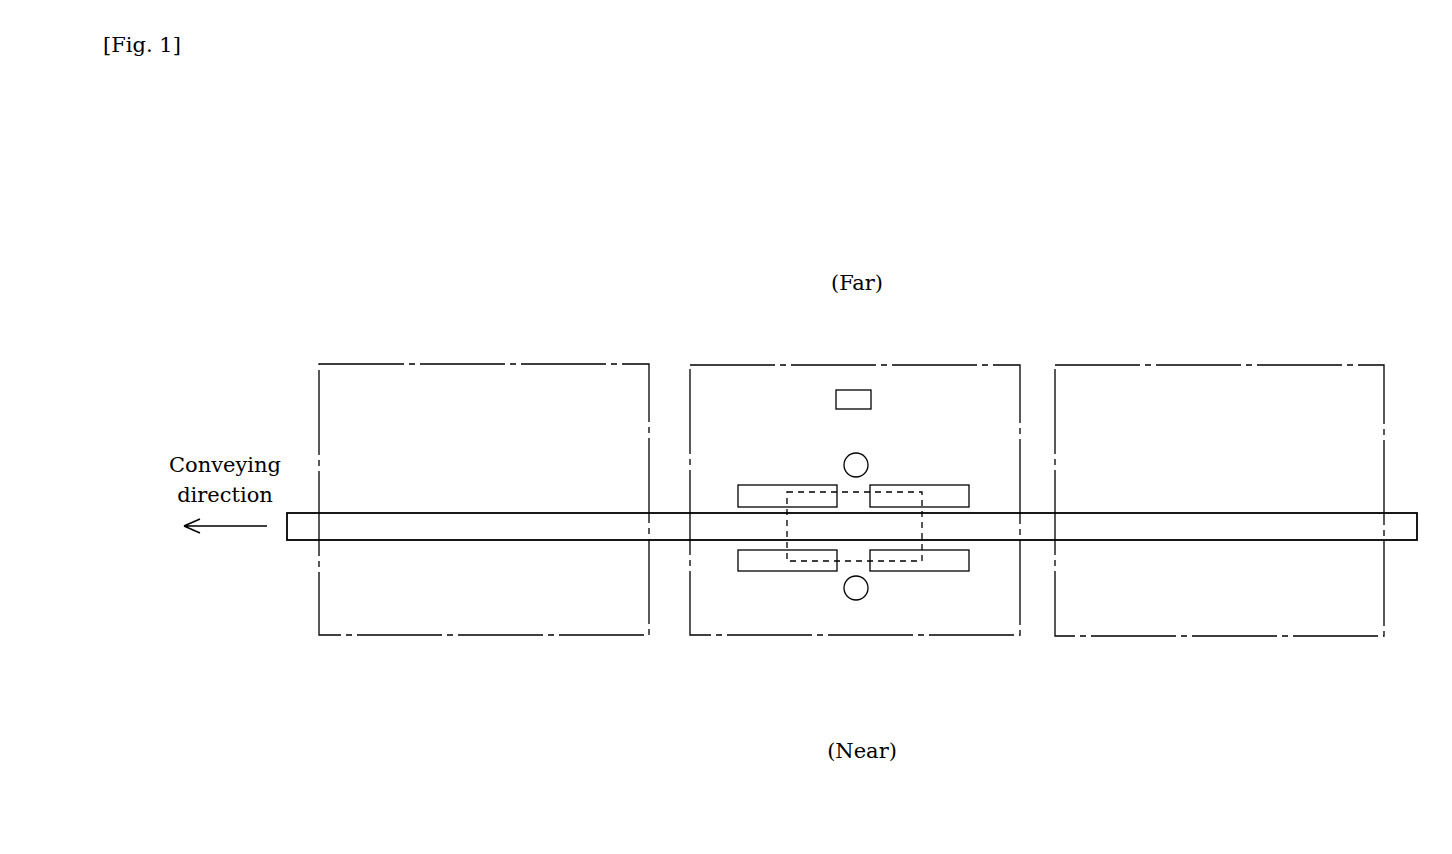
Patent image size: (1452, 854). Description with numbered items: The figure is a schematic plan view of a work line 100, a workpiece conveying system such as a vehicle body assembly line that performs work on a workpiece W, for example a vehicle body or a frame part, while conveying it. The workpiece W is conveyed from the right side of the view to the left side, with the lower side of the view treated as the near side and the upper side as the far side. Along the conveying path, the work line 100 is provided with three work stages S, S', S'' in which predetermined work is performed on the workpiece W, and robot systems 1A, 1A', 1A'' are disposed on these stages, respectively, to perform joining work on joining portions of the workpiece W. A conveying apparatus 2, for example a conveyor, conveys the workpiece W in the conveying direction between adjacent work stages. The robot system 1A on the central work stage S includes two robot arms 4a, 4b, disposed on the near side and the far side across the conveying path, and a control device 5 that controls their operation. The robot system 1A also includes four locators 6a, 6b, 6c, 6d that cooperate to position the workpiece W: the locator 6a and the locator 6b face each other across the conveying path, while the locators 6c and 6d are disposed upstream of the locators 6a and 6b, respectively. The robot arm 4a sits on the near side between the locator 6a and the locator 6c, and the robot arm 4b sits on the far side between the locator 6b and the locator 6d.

The work line 100 is at (1246, 244).
The robot system 1A is at (855, 501).
The robot system 1A' is at (1219, 503).
The robot system 1A'' is at (484, 501).
The conveying apparatus 2 is at (1404, 543).
The robot arm 4a is at (865, 598).
The robot arm 4b is at (850, 455).
The control device 5 is at (836, 395).
The locator 6a is at (770, 570).
The locator 6b is at (762, 485).
The locator 6c is at (935, 571).
The locator 6d is at (937, 485).
The work stage S is at (855, 544).
The work stage S' is at (1219, 545).
The work stage S'' is at (484, 543).
The workpiece W is at (843, 561).